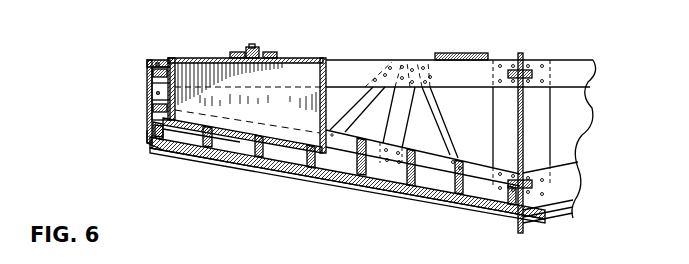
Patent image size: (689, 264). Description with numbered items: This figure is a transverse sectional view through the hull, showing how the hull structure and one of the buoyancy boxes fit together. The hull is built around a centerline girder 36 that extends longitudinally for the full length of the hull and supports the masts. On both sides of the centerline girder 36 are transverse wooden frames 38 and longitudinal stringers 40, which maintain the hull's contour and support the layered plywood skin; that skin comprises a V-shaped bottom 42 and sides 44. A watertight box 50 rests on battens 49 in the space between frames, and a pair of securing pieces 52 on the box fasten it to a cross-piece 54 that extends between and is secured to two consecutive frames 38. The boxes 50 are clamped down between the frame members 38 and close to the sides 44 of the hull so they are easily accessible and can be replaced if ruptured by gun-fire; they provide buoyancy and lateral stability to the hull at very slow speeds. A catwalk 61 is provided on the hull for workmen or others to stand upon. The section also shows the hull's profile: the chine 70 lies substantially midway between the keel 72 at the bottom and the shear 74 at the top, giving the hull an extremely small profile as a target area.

The centerline girder 36 is at (524, 121).
The transverse wooden frames 38 is at (355, 66).
The longitudinal stringers 40 is at (214, 142).
The V-shaped bottom 42 is at (332, 187).
The sides 44 is at (151, 94).
The battens 49 is at (197, 132).
The watertight boxes 50 is at (178, 58).
The securing pieces 52 is at (238, 52).
The cross-piece 54 is at (260, 50).
The catwalks 61 is at (455, 53).
The chine 70 is at (151, 142).
The keel 72 is at (521, 233).
The shear 74 is at (150, 62).